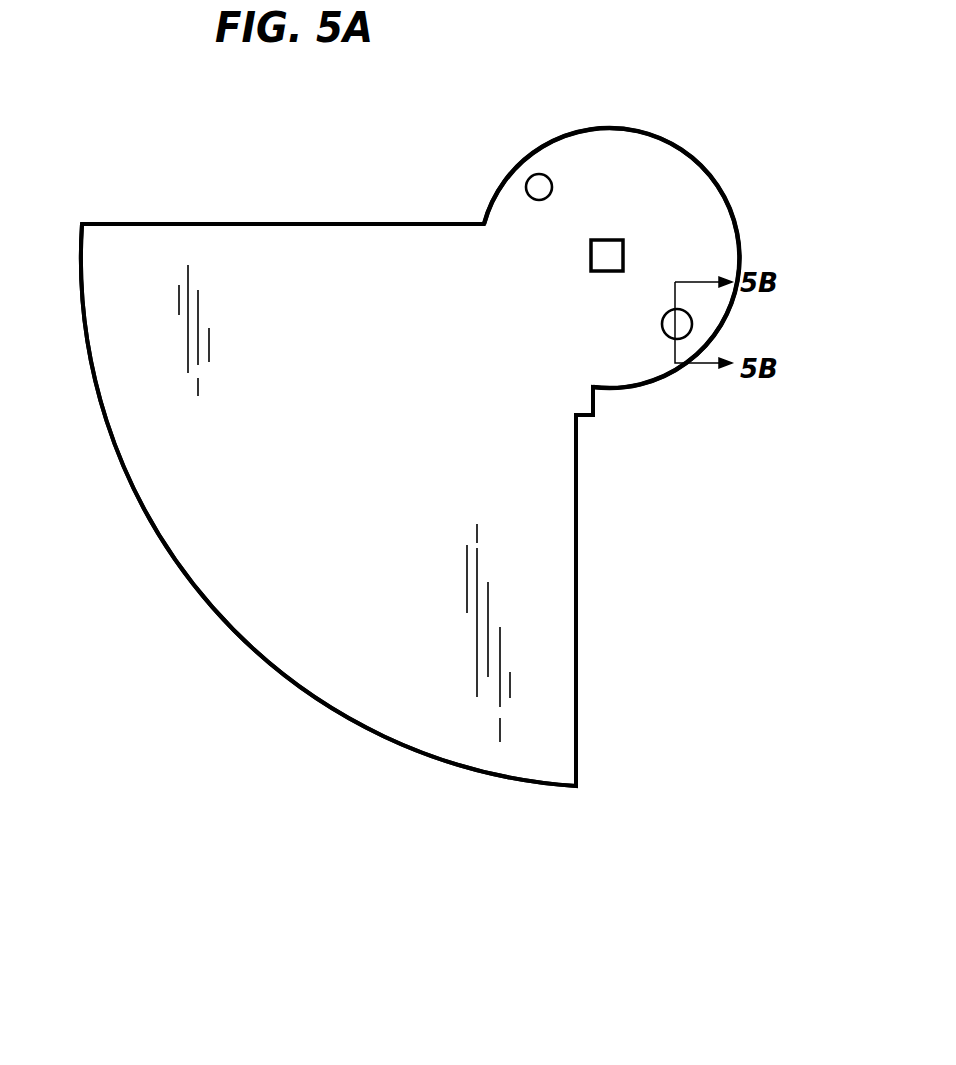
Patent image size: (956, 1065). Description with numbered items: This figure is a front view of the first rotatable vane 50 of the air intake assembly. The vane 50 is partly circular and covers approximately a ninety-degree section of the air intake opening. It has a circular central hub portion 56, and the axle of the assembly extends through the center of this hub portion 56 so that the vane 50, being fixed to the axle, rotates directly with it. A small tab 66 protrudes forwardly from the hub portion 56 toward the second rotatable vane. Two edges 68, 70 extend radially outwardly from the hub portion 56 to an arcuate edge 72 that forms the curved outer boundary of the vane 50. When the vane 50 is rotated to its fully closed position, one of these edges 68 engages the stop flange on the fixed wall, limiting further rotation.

The first rotatable vane 50 is at (353, 472).
The circular central hub portion 56 is at (622, 205).
The small tab 66 is at (692, 320).
The edge 68 is at (577, 608).
The edge 70 is at (205, 224).
The arcuate edge 72 is at (216, 612).